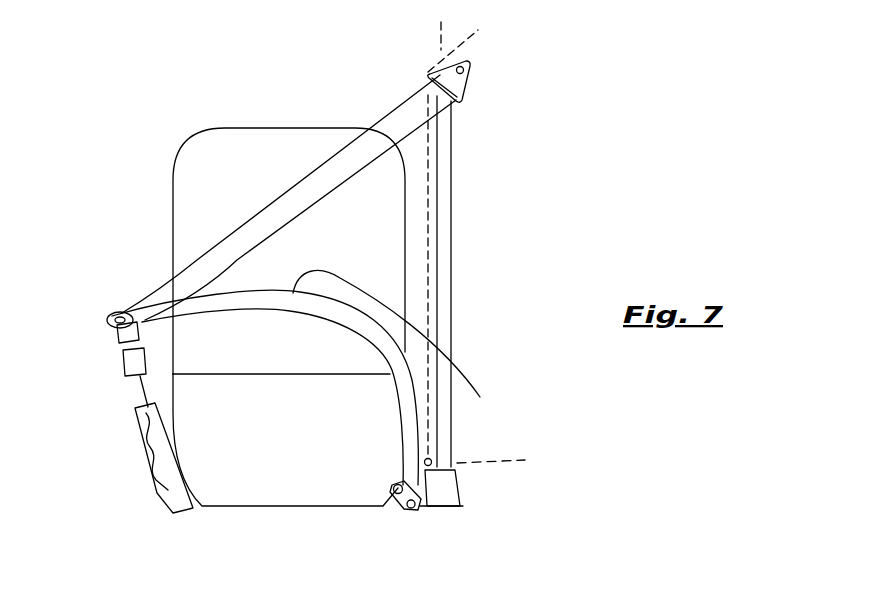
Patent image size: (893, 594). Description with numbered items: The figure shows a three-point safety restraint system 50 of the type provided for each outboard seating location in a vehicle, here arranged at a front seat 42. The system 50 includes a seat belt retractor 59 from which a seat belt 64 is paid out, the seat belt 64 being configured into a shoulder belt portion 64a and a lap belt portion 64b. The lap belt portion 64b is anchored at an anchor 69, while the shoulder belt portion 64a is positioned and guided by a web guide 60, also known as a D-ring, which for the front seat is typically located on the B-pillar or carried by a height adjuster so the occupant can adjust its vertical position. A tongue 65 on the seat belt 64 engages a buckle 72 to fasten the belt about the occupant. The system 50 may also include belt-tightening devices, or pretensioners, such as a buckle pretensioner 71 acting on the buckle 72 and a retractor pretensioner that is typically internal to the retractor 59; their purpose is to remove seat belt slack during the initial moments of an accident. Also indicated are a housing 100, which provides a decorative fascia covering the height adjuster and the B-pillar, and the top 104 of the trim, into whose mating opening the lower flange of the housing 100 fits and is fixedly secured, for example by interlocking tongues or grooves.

The front seat 42 is at (270, 142).
The three-point safety restraint system 50 is at (452, 233).
The seat belt retractor 59 is at (445, 482).
The web guide 60 is at (467, 90).
The seat belt 64 is at (452, 297).
The shoulder belt portion 64a is at (190, 273).
The lap belt portion 64b is at (480, 397).
The tongue 65 is at (115, 338).
The anchor 69 is at (402, 500).
The buckle pretensioner 71 is at (143, 482).
The buckle 72 is at (122, 362).
The housing 100 is at (434, 244).
The top of the trim 104 is at (513, 458).